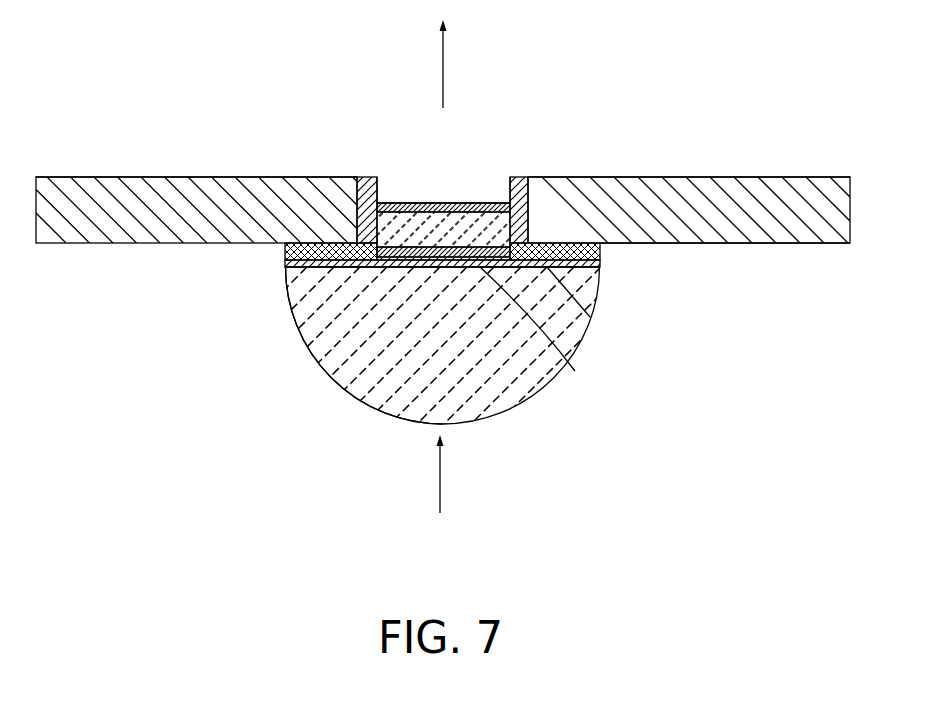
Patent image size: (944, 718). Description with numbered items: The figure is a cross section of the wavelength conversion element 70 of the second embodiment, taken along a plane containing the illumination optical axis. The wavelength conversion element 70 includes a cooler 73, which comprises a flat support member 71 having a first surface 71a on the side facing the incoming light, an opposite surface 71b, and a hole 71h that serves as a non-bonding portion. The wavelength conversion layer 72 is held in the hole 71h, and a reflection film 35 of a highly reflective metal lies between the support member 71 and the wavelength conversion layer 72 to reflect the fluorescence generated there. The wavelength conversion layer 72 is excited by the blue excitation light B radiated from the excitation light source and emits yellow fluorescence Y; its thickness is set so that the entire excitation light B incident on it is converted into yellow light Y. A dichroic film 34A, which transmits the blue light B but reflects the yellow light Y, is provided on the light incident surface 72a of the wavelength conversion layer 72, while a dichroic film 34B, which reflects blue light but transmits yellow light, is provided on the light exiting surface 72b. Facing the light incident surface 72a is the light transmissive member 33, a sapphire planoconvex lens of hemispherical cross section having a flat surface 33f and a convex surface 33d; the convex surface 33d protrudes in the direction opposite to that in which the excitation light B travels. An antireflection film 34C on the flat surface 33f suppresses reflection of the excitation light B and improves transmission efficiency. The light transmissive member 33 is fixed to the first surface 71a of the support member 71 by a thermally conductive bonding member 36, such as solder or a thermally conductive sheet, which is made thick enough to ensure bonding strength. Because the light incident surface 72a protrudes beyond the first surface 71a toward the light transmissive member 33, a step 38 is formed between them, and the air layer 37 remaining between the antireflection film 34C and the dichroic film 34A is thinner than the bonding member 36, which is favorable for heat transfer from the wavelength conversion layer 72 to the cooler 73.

The wavelength conversion element 70 is at (238, 110).
The support member 71 is at (722, 190).
The first surface of the support member 71a is at (808, 244).
The second surface of the support member 71b is at (808, 177).
The hole 71h is at (386, 170).
The cooler 73 is at (158, 168).
The dichroic film 34A is at (334, 176).
The dichroic film 34B is at (450, 203).
The antireflection film 34C is at (283, 268).
The reflection film 35 is at (515, 176).
The bonding member 36 is at (283, 248).
The wavelength conversion layer 72 is at (490, 203).
The light incident surface 72a is at (389, 257).
The light exiting surface 72b is at (410, 203).
The light transmissive member 33 is at (352, 377).
The convex surface 33d is at (305, 355).
The flat surface 33f is at (598, 262).
The air layer 37 is at (576, 371).
The step 38 is at (590, 317).
The yellow light Y is at (443, 68).
The excitation light B is at (440, 485).